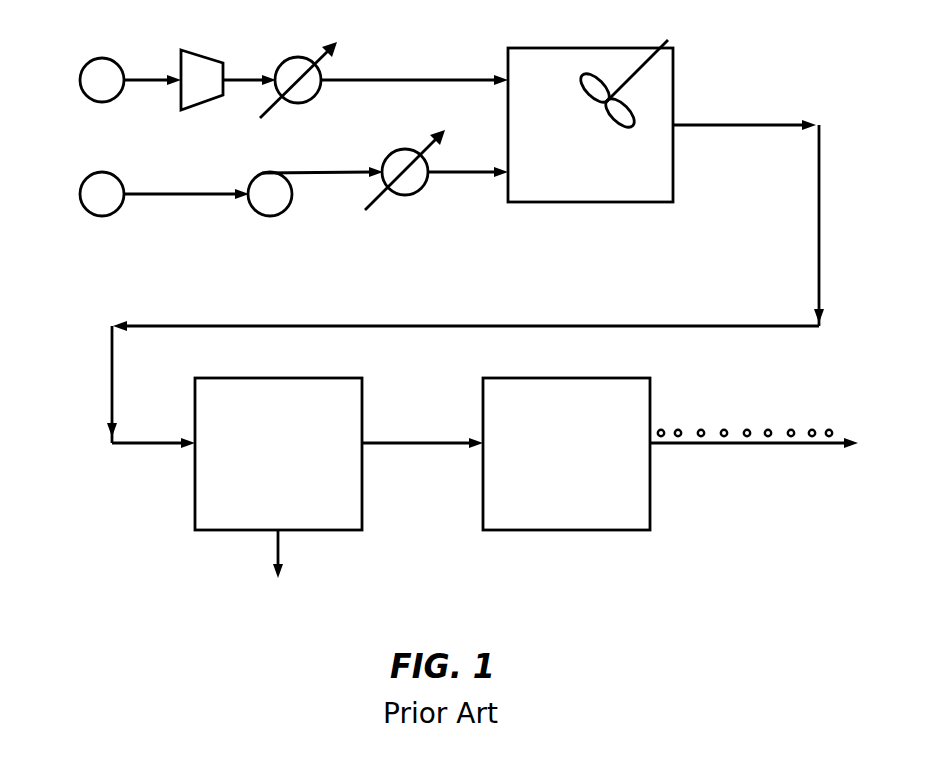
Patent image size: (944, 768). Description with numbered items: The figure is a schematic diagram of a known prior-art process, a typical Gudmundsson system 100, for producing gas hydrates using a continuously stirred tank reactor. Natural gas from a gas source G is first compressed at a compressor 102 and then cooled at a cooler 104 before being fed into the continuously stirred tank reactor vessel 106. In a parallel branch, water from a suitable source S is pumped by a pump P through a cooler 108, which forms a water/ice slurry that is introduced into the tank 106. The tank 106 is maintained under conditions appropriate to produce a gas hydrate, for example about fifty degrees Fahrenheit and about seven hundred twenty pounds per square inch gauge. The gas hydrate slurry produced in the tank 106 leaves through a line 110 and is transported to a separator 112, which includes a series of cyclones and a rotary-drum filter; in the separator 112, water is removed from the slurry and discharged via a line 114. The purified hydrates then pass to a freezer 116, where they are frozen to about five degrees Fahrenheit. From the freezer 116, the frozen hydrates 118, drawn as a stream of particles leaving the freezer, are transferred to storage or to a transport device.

The system 100 is at (70, 500).
The compressor 102 is at (207, 53).
The cooler 104 is at (302, 57).
The continuously stirred tank reactor vessel 106 is at (563, 82).
The cooler 108 is at (404, 150).
The line 110 is at (672, 323).
The separator 112 is at (347, 408).
The line 114 is at (276, 542).
The freezer 116 is at (632, 408).
The hydrates 118 is at (661, 428).